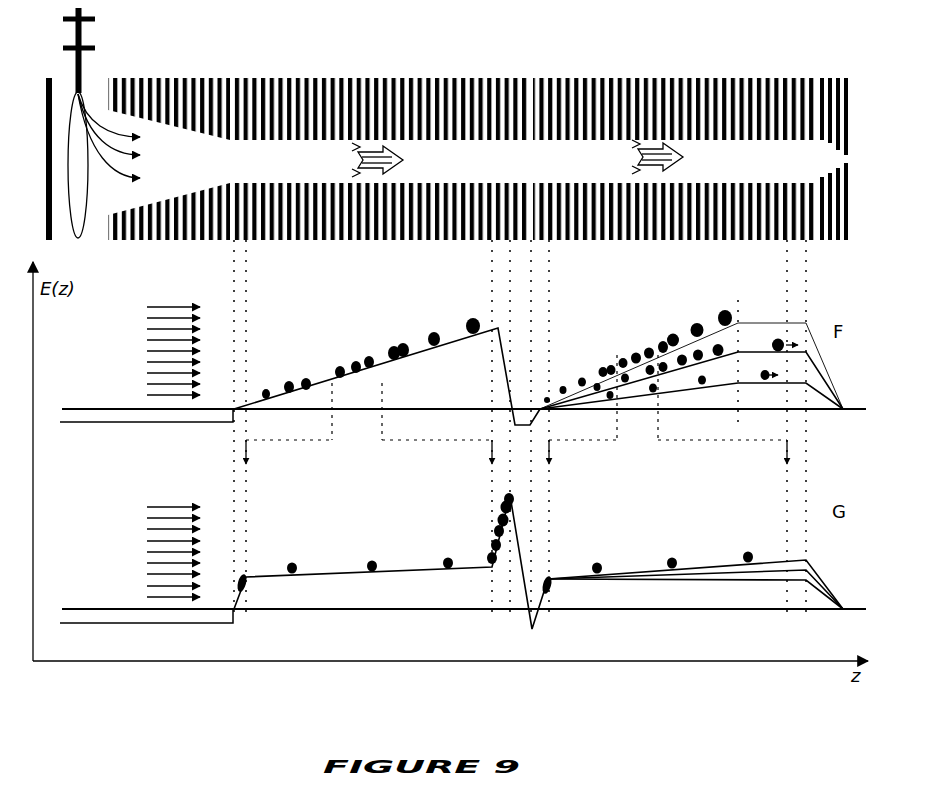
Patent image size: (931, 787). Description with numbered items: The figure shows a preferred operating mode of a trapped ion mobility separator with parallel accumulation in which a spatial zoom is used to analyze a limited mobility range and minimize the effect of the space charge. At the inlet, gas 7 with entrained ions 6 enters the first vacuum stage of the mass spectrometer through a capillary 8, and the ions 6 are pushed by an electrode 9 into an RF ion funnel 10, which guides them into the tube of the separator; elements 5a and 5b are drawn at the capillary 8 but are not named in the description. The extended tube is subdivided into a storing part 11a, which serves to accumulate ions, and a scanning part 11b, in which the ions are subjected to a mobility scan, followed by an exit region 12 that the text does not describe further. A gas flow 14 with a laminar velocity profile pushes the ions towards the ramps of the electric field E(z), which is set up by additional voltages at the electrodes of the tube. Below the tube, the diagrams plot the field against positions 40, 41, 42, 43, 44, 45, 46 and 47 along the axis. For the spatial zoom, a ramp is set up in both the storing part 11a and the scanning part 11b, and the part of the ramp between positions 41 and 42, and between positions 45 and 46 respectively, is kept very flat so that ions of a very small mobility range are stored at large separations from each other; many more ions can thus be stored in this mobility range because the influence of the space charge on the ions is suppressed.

The first electrode 5a is at (91, 21).
The second electrode 5b is at (92, 49).
The ions 6 is at (109, 136).
The gas 7 is at (78, 165).
The capillary 8 is at (86, 50).
The electrode 9 is at (49, 148).
The RF ion funnel 10 is at (232, 71).
The storing part 11a is at (528, 73).
The scanning part 11b is at (815, 73).
The exit region 12 is at (848, 73).
The gas flow 14 is at (510, 158).
The position 40 is at (221, 429).
The position 41 is at (259, 429).
The position 42 is at (481, 429).
The position 43 is at (508, 429).
The position 44 is at (533, 429).
The position 45 is at (551, 429).
The position 46 is at (776, 429).
The position 47 is at (817, 429).